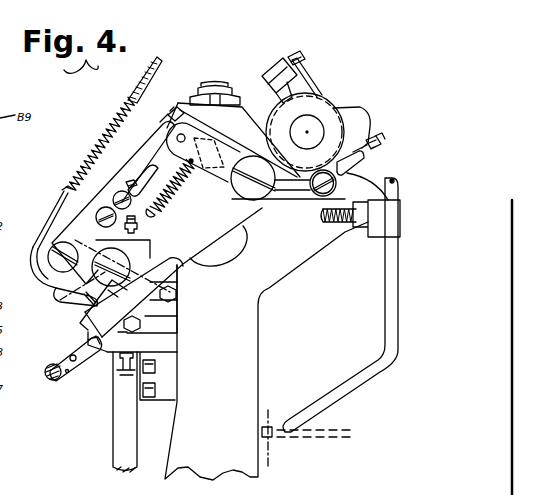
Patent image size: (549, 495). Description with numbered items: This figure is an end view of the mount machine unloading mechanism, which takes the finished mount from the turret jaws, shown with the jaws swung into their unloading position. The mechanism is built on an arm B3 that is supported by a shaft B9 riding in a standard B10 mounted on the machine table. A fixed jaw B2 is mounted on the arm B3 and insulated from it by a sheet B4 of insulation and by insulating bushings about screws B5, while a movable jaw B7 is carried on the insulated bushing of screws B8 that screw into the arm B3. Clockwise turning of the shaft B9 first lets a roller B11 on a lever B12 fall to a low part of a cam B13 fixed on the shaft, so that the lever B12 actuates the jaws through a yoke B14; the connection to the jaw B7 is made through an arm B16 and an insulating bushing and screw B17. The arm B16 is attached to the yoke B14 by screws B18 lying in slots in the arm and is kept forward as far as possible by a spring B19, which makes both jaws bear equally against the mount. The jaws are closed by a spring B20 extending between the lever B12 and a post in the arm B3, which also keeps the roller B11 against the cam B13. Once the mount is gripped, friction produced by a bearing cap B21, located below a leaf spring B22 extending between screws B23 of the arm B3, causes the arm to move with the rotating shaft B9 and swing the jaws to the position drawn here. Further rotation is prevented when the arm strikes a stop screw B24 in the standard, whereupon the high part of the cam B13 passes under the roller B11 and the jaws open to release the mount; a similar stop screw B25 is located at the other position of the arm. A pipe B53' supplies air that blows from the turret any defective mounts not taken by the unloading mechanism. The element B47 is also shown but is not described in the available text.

The fixed jaw B2 is at (107, 330).
The arm B3 is at (227, 247).
The sheet of insulation B4 is at (178, 286).
The screws B5 is at (140, 322).
The movable jaw B7 is at (84, 313).
The screws B8 is at (118, 258).
The shaft B9 is at (320, 122).
The standard B10 is at (258, 322).
The roller B11 is at (318, 197).
The lever B12 is at (281, 203).
The cam B13 is at (370, 113).
The yoke B14 is at (140, 165).
The arm B16 is at (80, 227).
The screw B17 is at (52, 251).
The screws B18 is at (104, 208).
The spring B19 is at (126, 185).
The spring B20 is at (170, 187).
The bearing cap B21 is at (273, 77).
The leaf spring B22 is at (308, 80).
The screws B23 is at (302, 60).
The stop screw B24 is at (172, 120).
The stop screw B25 is at (340, 222).
The rod B47 is at (113, 460).
The pipe B53' is at (330, 322).